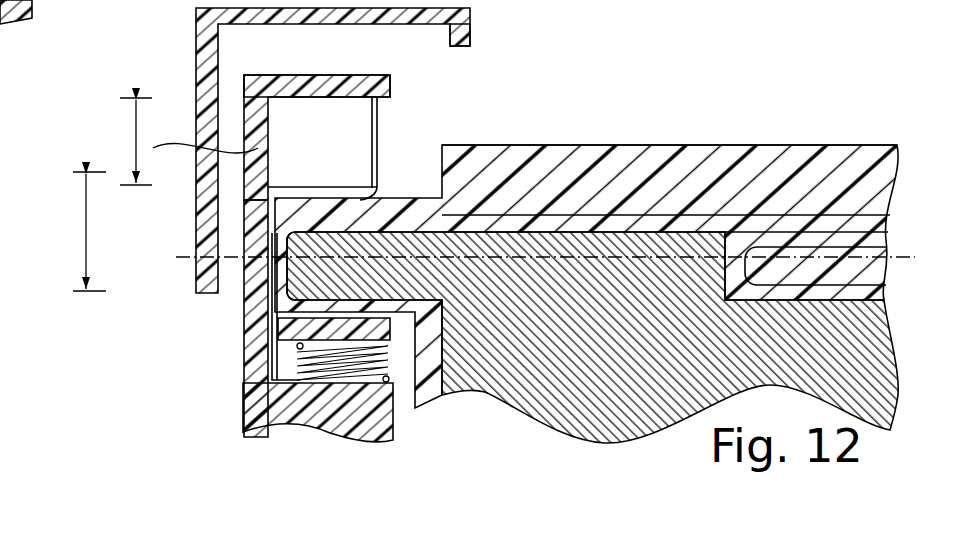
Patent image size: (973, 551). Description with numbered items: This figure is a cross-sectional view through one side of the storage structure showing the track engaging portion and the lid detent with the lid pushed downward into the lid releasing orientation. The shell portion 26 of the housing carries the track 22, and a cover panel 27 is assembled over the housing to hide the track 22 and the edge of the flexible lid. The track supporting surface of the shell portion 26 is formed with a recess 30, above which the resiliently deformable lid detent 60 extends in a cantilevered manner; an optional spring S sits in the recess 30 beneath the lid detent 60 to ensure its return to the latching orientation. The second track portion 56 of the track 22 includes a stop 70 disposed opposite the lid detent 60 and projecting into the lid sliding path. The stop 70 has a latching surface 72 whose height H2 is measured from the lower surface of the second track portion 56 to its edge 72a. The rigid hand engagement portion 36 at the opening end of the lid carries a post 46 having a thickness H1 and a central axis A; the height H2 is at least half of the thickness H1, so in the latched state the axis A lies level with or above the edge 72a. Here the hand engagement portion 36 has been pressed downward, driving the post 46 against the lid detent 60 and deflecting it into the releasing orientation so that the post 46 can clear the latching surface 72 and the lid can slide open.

The track 22 is at (250, 97).
The shell portion 26 is at (392, 426).
The cover panel 27 is at (462, 18).
The recess 30 is at (243, 402).
The hand engagement portion 36 is at (672, 144).
The post 46 is at (405, 207).
The second track portion 56 is at (358, 80).
The resiliently deformable lid detent 60 is at (290, 323).
The stop 70 is at (378, 105).
The latching surface 72 is at (322, 118).
The edge 72a is at (368, 193).
The spring S is at (375, 352).
The central axis A is at (918, 257).
The thickness H1 is at (89, 247).
The height H2 is at (136, 159).